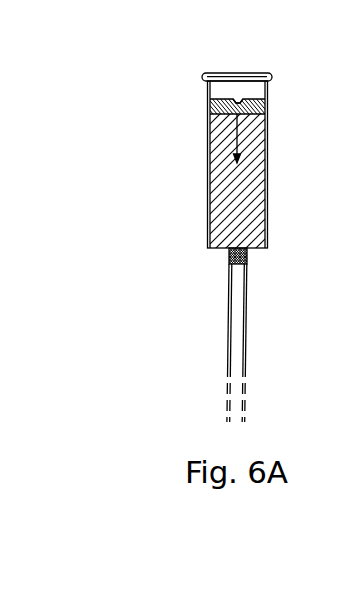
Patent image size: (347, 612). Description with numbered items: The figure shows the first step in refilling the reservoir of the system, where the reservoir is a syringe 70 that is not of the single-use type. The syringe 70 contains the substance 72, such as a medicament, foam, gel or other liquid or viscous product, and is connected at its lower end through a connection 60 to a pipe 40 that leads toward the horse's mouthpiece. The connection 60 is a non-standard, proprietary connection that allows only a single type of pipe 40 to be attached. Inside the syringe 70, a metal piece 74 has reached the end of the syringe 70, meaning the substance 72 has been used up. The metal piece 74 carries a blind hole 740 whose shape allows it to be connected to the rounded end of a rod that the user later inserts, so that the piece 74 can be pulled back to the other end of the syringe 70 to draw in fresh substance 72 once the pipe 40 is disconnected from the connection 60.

The syringe 70 is at (258, 93).
The blind hole 740 is at (238, 101).
The metal piece 74 is at (208, 111).
The substance 72 is at (266, 178).
The connection 60 is at (229, 258).
The pipe 40 is at (228, 336).